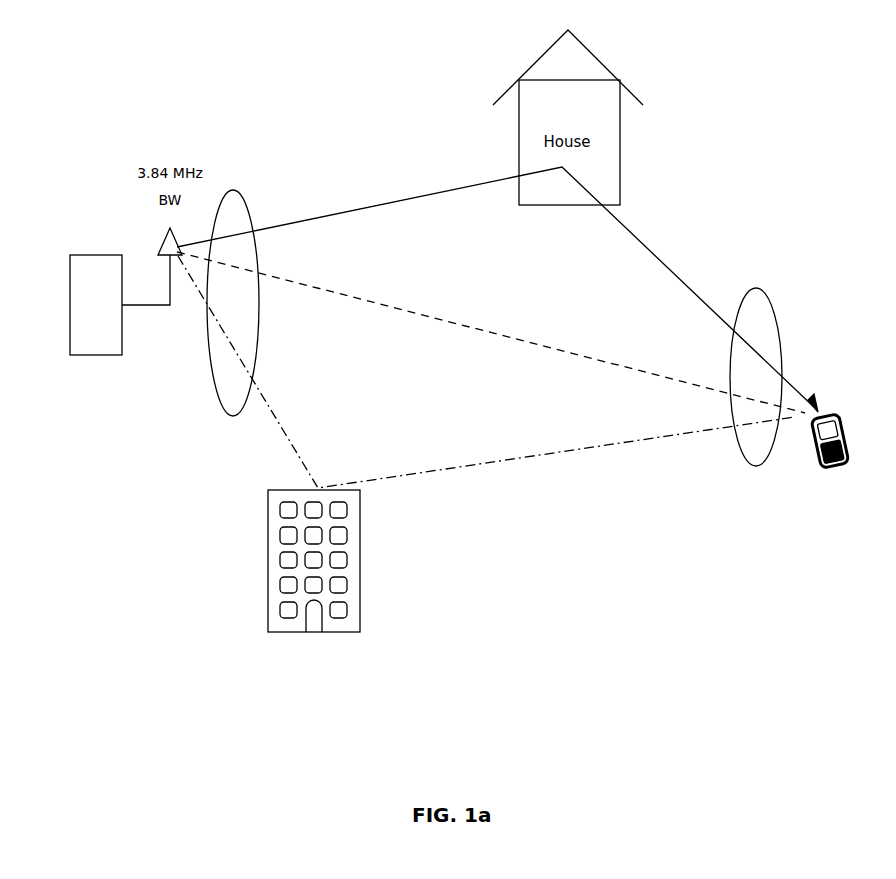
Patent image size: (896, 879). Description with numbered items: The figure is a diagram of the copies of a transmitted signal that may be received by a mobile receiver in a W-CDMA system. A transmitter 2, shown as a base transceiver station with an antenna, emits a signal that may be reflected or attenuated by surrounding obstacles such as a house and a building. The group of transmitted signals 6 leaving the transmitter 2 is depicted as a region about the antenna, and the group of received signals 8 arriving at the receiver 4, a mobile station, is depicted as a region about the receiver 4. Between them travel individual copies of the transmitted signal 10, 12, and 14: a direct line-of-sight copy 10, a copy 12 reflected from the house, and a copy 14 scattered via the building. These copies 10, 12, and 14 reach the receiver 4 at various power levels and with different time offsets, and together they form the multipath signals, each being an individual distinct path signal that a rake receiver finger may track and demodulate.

The transmitter 2 is at (100, 355).
The receiver 4 is at (847, 462).
The group of transmitted signals 6 is at (248, 202).
The group of received signals 8 is at (778, 312).
The individual copy of the transmitted signal 10 is at (543, 345).
The individual copy of the transmitted signal 12 is at (698, 288).
The individual copy of the transmitted signal 14 is at (418, 480).